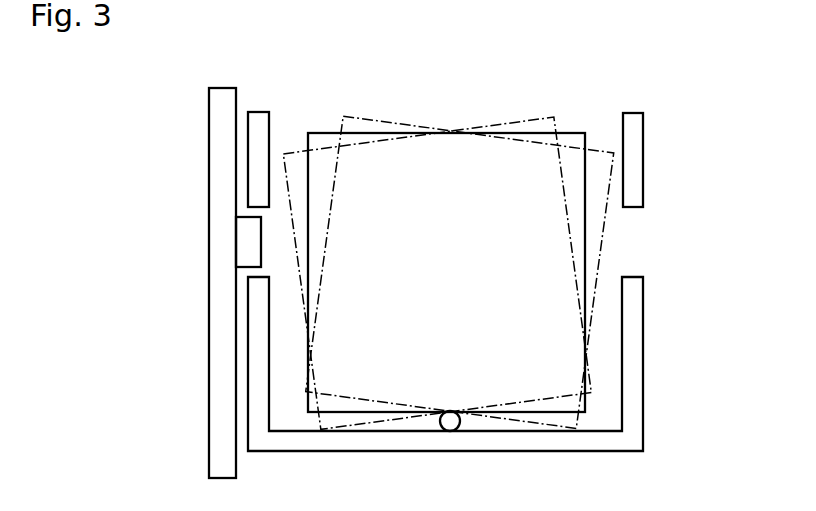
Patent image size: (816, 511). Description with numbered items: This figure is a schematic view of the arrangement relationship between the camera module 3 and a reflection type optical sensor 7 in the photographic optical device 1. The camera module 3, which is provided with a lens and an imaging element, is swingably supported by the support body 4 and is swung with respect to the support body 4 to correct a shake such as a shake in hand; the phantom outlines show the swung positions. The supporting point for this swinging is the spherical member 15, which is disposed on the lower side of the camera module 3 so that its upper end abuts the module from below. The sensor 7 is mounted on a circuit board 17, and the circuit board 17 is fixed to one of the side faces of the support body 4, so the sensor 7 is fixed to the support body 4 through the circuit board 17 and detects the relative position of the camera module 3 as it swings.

The photographic optical device 1 is at (683, 92).
The camera module 3 is at (371, 133).
The support body 4 is at (643, 365).
The reflection type optical sensor 7 is at (236, 242).
The spherical member 15 is at (461, 420).
The circuit board 17 is at (209, 154).